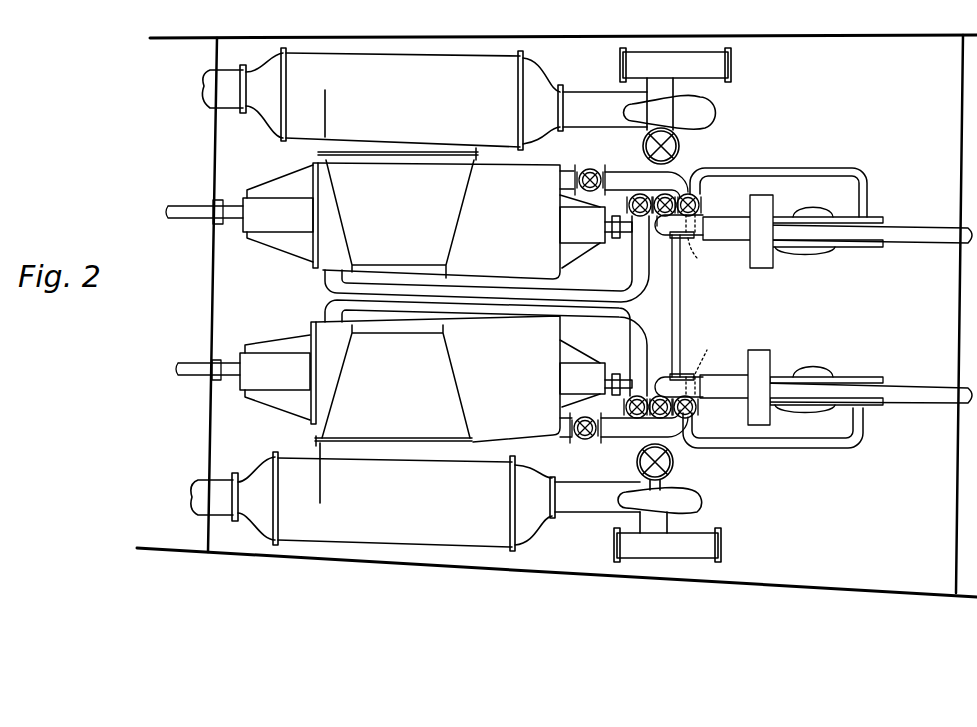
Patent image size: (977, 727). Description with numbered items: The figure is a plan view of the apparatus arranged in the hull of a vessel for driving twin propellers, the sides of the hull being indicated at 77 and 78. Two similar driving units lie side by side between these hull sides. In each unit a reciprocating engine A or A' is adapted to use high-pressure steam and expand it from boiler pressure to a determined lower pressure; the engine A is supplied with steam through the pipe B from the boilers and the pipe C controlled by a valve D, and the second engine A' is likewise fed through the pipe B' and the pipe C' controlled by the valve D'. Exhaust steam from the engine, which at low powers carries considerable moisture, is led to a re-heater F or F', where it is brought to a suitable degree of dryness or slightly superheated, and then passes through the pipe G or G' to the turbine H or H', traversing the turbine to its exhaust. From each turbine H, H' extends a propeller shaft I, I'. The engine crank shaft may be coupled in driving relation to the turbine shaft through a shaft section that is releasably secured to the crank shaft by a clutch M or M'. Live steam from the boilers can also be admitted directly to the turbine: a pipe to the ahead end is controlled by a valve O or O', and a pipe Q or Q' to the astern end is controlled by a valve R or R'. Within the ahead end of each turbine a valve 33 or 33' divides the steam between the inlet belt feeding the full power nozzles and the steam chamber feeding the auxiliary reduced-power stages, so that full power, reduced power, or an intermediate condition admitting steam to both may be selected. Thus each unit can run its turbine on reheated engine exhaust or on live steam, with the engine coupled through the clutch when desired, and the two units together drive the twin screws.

The side of the hull 77 is at (792, 28).
The side of the hull 78 is at (698, 581).
The propeller shaft I is at (204, 204).
The propeller shaft I' is at (208, 359).
The turbine H is at (437, 213).
The turbine H' is at (436, 381).
The valve 33 is at (624, 170).
The valve 33' is at (615, 438).
The valve R is at (642, 179).
The valve R' is at (635, 432).
The valve D is at (683, 212).
The valve D' is at (685, 398).
The pipe G is at (695, 256).
The pipe G' is at (703, 357).
The pipe Q is at (487, 259).
The pipe Q' is at (490, 344).
The valve O is at (667, 301).
The valve O' is at (662, 300).
The pipe C is at (778, 184).
The pipe C' is at (773, 441).
The re-heater F is at (731, 243).
The re-heater F' is at (730, 374).
The pipe B is at (866, 224).
The pipe B' is at (866, 386).
The reciprocating engine A is at (826, 222).
The reciprocating engine A' is at (826, 377).
The clutch M is at (763, 248).
The clutch M' is at (765, 376).